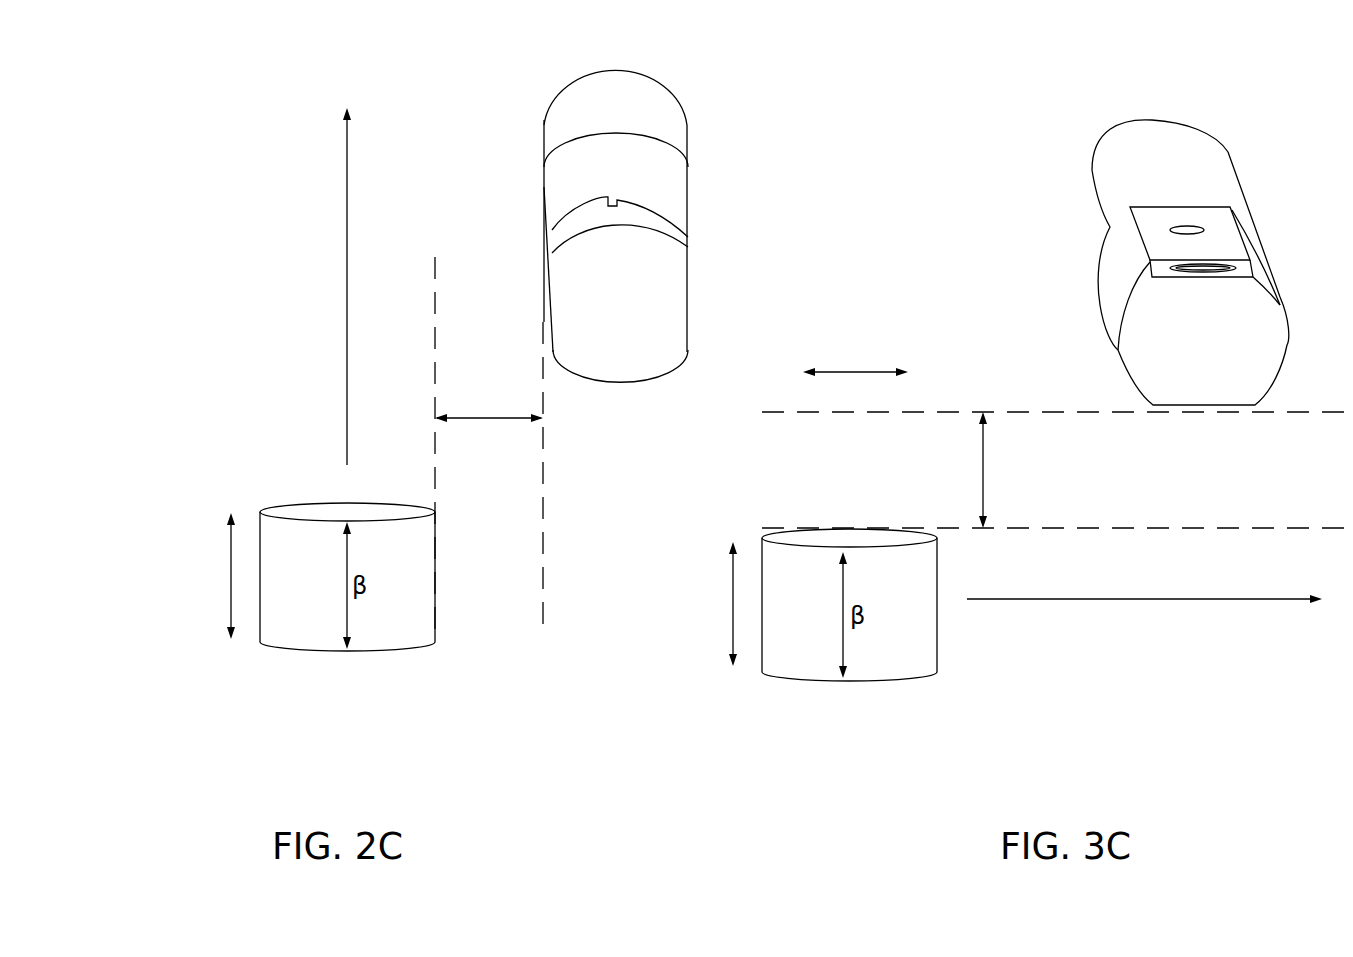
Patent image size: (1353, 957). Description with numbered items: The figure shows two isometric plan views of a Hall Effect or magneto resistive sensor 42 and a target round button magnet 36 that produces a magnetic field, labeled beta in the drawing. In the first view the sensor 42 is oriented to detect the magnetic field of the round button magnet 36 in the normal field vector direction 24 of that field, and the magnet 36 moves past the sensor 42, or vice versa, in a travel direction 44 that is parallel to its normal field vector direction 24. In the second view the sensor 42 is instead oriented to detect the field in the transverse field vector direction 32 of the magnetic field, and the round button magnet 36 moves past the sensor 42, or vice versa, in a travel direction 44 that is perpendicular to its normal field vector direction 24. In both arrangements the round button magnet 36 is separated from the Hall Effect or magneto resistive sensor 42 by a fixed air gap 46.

In FIG. 2C, the normal field vector direction 24 is at (228, 578).
In FIG. 3C, the normal field vector direction 24 is at (730, 603).
In FIG. 3C, the transverse field vector direction 32 is at (858, 370).
In FIG. 2C, the round button magnet 36 is at (403, 633).
In FIG. 3C, the round button magnet 36 is at (915, 660).
In FIG. 2C, the Hall Effect or magneto resistive sensor 42 is at (690, 183).
In FIG. 3C, the Hall Effect or magneto resistive sensor 42 is at (1222, 240).
In FIG. 2C, the travel direction 44 is at (344, 291).
In FIG. 3C, the travel direction 44 is at (1138, 602).
In FIG. 2C, the fixed air gap 46 is at (492, 415).
In FIG. 3C, the fixed air gap 46 is at (980, 470).